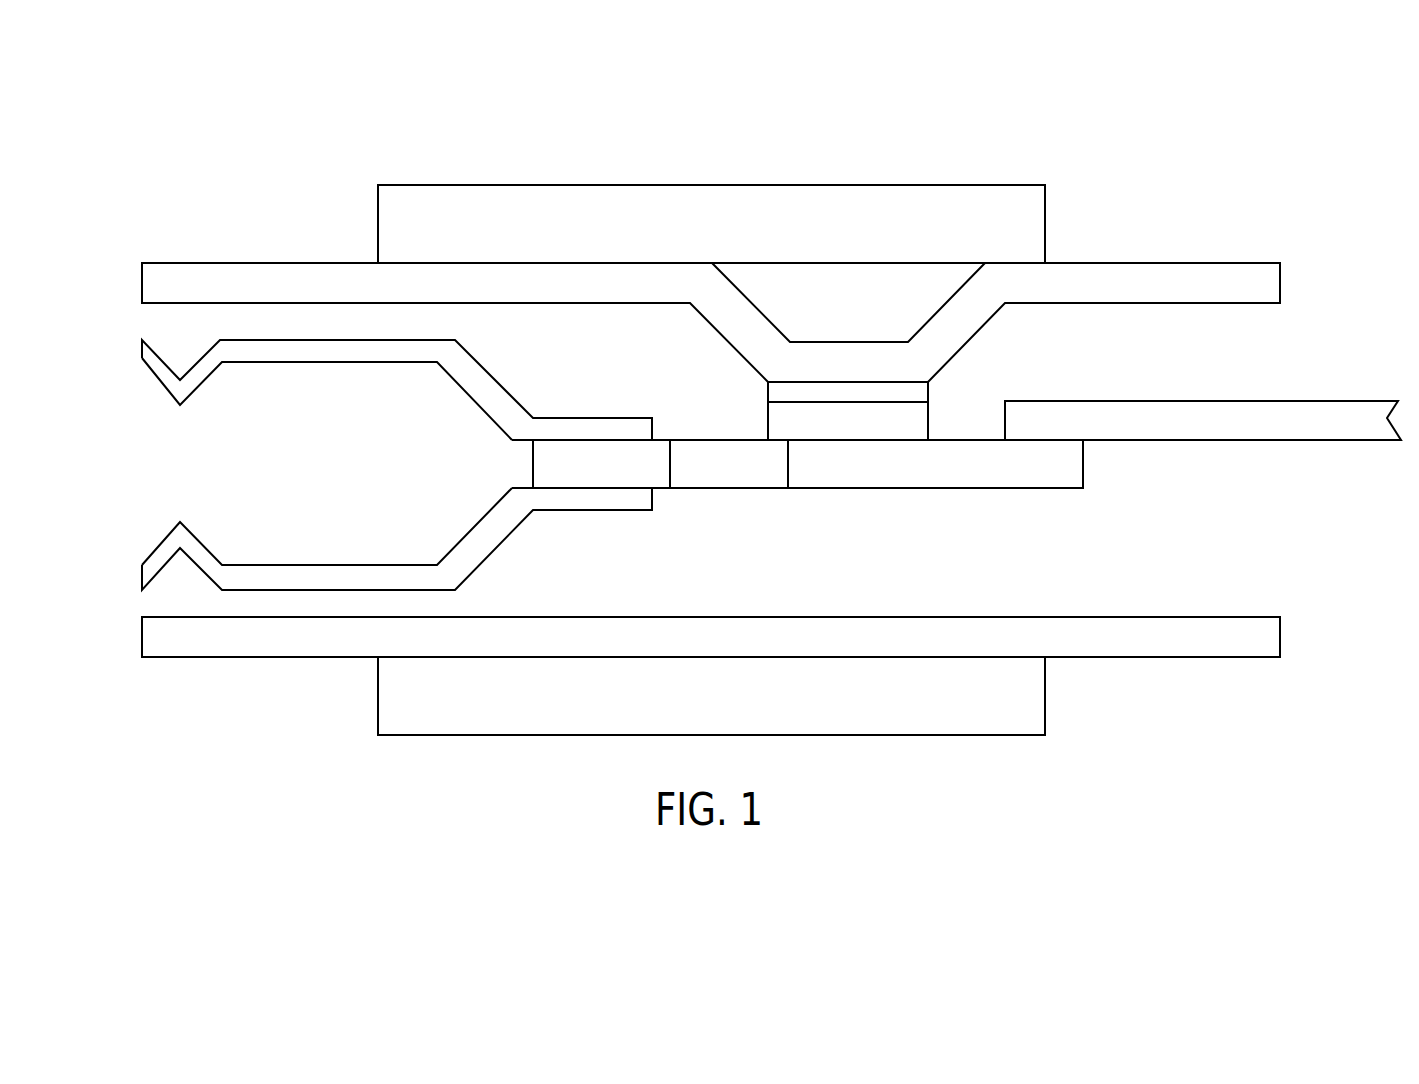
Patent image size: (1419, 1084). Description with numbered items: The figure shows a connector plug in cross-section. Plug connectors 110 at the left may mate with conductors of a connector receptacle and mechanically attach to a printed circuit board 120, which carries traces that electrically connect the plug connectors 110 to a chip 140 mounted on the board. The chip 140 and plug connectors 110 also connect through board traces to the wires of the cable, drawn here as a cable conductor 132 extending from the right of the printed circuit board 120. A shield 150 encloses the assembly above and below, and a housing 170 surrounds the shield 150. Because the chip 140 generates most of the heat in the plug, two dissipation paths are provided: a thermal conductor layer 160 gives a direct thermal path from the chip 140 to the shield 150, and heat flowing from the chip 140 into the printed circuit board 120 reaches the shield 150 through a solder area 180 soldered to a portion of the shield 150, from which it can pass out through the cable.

The plug connectors 110 is at (368, 565).
The printed circuit board 120 is at (1085, 467).
The cable conductor 132 is at (1290, 441).
The chip 140 is at (929, 415).
The shield 150 is at (313, 262).
The thermal conductor layer 160 is at (768, 393).
The housing 170 is at (1046, 227).
The solder area 180 is at (755, 475).